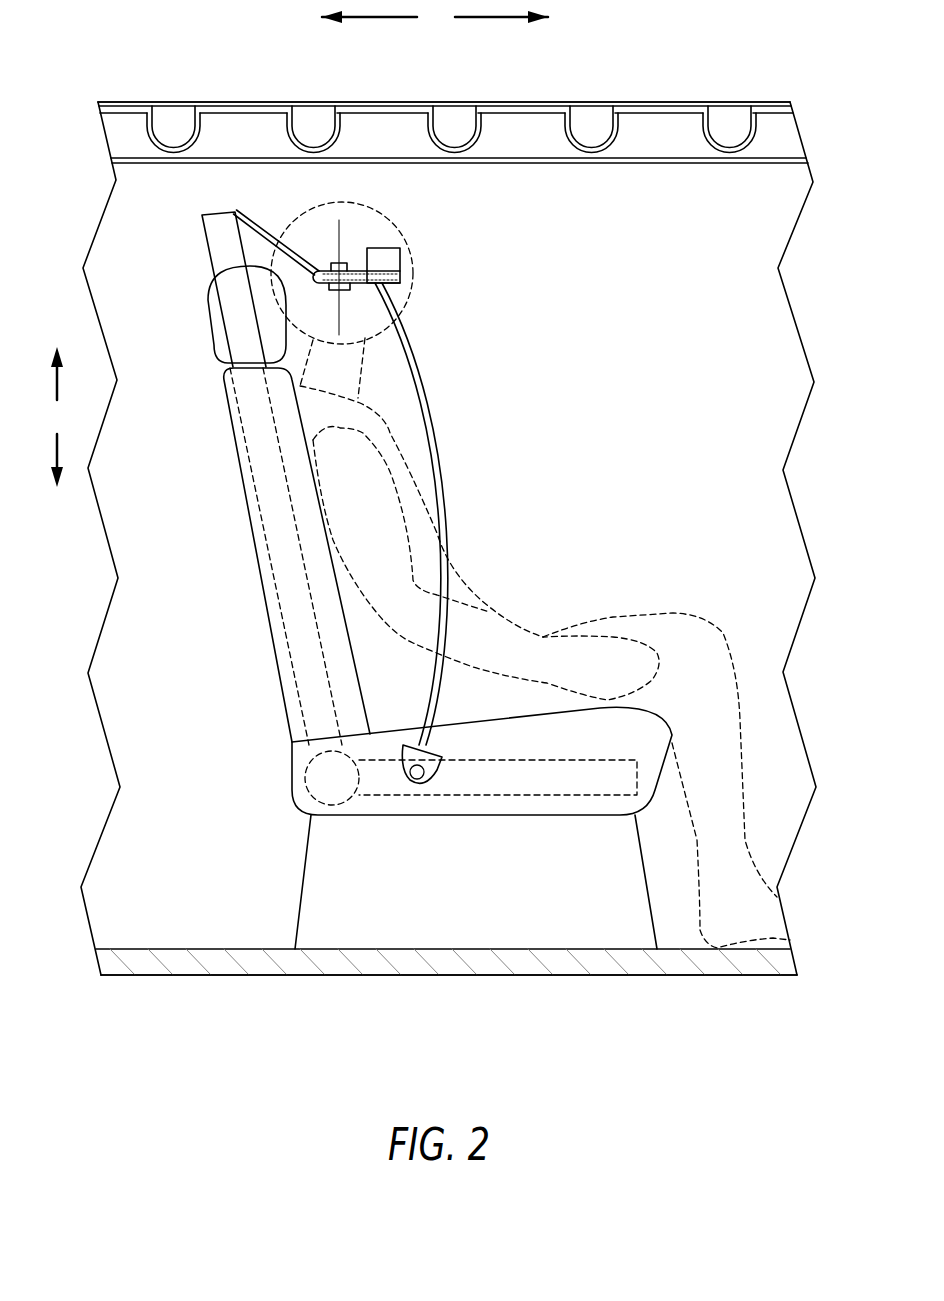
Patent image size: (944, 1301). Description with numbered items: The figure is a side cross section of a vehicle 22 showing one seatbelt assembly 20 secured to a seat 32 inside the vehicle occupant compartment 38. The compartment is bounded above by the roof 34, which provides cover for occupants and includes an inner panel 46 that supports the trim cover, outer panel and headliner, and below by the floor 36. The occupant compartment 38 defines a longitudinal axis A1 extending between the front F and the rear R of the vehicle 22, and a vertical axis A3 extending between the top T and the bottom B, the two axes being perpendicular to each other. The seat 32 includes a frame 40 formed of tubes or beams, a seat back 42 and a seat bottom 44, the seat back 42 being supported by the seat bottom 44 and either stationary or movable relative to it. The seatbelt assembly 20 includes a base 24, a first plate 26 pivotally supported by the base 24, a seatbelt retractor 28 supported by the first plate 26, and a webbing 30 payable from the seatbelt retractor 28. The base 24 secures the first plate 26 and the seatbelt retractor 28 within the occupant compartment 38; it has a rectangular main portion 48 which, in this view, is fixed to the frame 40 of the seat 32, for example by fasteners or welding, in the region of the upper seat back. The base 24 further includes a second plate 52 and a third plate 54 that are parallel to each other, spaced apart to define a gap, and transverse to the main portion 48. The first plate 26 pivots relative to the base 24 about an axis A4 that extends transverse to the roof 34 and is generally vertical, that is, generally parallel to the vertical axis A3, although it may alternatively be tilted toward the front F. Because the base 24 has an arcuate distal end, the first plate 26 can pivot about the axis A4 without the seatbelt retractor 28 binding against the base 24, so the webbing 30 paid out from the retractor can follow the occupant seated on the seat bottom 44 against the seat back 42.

The seatbelt assembly 20 is at (488, 268).
The vehicle 22 is at (168, 102).
The roof 34 is at (253, 102).
The inner panel 46 is at (336, 121).
The floor 36 is at (187, 948).
The base 24 is at (258, 227).
The first plate 26 is at (375, 286).
The seatbelt retractor 28 is at (390, 248).
The second plate 52 is at (328, 266).
The third plate 54 is at (325, 291).
The webbing 30 is at (438, 450).
The seat 32 is at (236, 458).
The frame 40 is at (223, 248).
The main portion 48 is at (300, 263).
The seat back 42 is at (265, 578).
The seat bottom 44 is at (515, 805).
The vehicle occupant compartment 38 is at (636, 361).
The top T is at (522, 102).
The bottom B is at (522, 975).
The rear R is at (112, 553).
The front F is at (770, 530).
The longitudinal axis A1 is at (435, 17).
The vertical axis A3 is at (56, 417).
The axis A4 is at (341, 238).